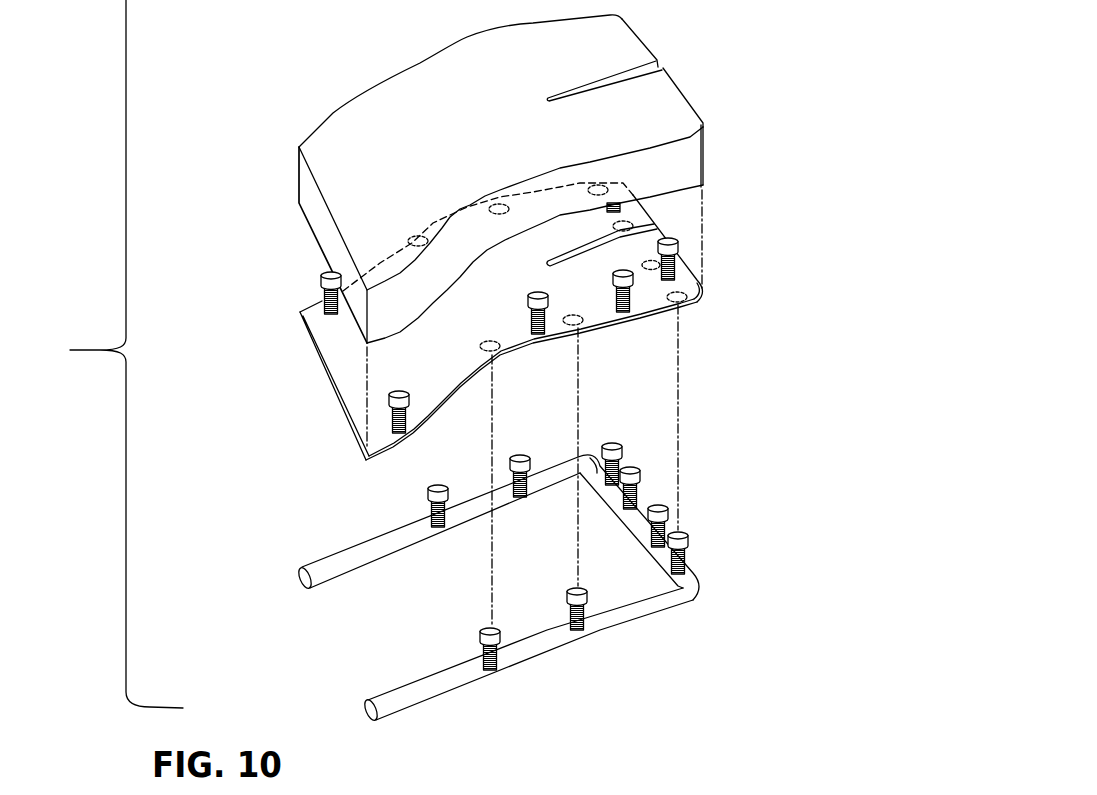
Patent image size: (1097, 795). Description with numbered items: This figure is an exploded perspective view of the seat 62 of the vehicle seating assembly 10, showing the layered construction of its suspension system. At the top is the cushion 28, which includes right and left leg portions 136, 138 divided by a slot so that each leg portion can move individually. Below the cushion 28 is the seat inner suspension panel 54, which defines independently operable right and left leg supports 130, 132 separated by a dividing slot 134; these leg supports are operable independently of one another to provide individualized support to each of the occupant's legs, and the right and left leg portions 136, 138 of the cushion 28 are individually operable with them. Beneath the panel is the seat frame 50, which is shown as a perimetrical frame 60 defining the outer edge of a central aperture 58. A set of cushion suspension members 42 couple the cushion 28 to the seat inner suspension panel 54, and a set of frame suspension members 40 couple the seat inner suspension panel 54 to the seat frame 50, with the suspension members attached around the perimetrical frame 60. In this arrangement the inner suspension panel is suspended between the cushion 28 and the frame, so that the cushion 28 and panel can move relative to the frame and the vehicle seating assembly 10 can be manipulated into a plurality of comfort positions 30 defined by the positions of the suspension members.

The vehicle seating assembly 10 is at (100, 350).
The cushion 28 is at (368, 135).
The comfort positions 30 is at (631, 790).
The frame suspension members 40 is at (474, 665).
The cushion suspension members 42 is at (372, 428).
The seat frame 50 is at (650, 597).
The seat inner suspension panel 54 is at (347, 376).
The central aperture 58 is at (344, 618).
The perimetrical frame 60 is at (428, 695).
The seat 62 is at (272, 245).
The right leg support 130 is at (703, 290).
The left leg support 132 is at (640, 215).
The dividing slot 134 is at (658, 222).
The right leg portion 136 is at (667, 108).
The left leg portion 138 is at (628, 43).